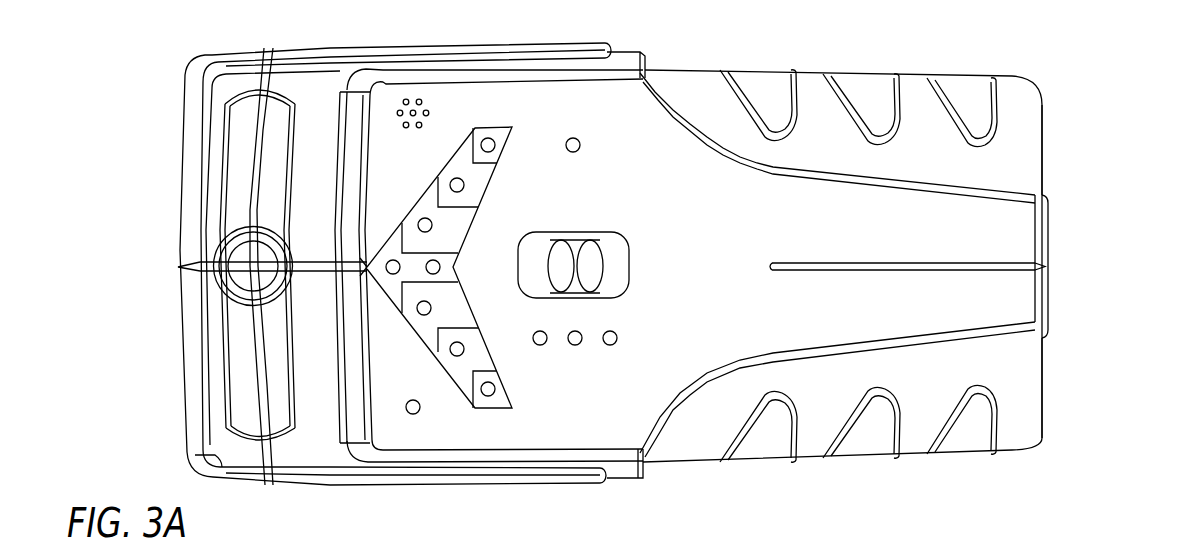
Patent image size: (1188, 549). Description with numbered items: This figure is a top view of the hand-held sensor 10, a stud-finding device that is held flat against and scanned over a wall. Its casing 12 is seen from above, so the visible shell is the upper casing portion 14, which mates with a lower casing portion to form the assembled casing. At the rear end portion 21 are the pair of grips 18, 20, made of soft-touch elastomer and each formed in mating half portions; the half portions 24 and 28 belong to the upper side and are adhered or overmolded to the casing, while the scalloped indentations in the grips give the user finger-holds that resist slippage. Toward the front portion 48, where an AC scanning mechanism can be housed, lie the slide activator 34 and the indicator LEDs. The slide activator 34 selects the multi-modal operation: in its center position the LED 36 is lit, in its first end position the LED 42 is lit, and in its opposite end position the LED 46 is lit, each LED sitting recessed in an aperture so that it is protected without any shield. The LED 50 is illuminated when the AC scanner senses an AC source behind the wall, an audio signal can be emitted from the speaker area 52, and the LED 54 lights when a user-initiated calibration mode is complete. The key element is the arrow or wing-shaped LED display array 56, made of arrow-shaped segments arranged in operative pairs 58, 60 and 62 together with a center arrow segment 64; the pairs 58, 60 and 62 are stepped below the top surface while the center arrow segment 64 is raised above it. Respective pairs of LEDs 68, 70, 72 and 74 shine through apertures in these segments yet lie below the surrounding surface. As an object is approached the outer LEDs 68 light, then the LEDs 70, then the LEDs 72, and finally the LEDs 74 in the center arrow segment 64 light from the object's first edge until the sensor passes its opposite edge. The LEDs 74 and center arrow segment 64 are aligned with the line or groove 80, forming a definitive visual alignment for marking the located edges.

The hand-held sensor 10 is at (1100, 75).
The casing 12 is at (652, 125).
The upper casing portion 14 is at (759, 325).
The grip 18 is at (1027, 147).
The grip 20 is at (1022, 411).
The rear end portion 21 is at (993, 243).
The grip half portion 24 is at (927, 158).
The grip half portion 28 is at (931, 388).
The slide activator 34 is at (574, 245).
The LED 36 is at (580, 345).
The LED 42 is at (618, 338).
The LED 46 is at (545, 345).
The front portion 48 is at (278, 358).
The LED 50 is at (418, 413).
The speaker area 52 is at (423, 102).
The LED 54 is at (581, 145).
The LED display array 56 is at (398, 361).
The arrow-shaped segment pair 58 is at (506, 133).
The arrow-shaped segment pair 60 is at (482, 182).
The arrow-shaped segment pair 62 is at (461, 225).
The center arrow segment 64 is at (387, 283).
The outer pair of LEDs 68 is at (487, 138).
The pair of LEDs 70 is at (454, 180).
The pair of LEDs 72 is at (423, 218).
The center LEDs 74 is at (391, 259).
The groove 80 is at (311, 260).